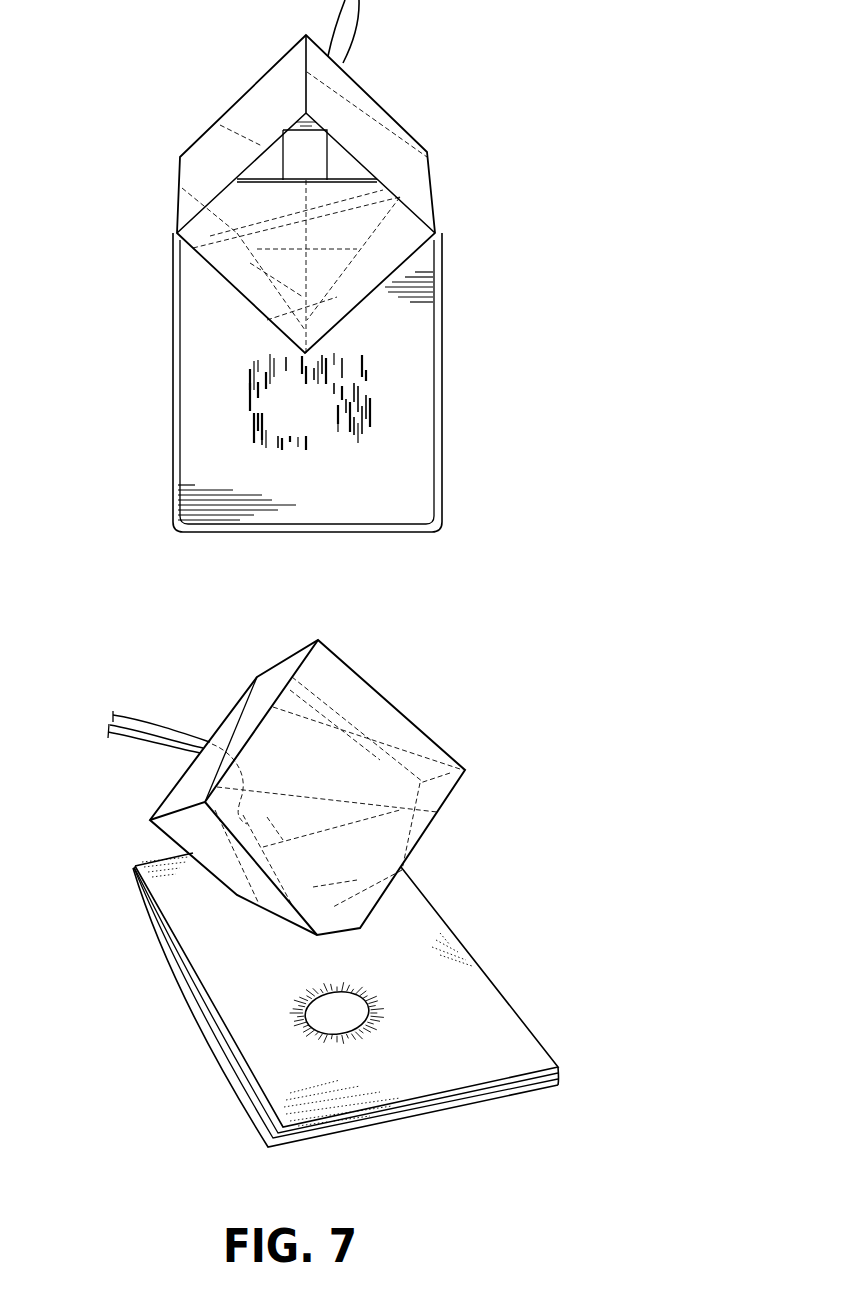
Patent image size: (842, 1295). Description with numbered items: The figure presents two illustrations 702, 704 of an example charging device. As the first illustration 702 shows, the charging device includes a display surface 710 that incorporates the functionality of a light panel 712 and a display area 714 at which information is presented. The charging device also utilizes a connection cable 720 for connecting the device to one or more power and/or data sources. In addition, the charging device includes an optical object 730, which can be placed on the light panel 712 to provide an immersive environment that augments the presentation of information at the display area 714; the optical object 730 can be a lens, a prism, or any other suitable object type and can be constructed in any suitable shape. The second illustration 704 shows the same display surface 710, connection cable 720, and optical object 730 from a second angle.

The illustration 702 is at (142, 67).
The illustration 704 is at (128, 650).
The display surface 710 is at (205, 395).
The light panel 712 is at (303, 273).
The display area 714 is at (303, 428).
The connection cable 720 is at (343, 42).
The optical object 730 is at (235, 148).